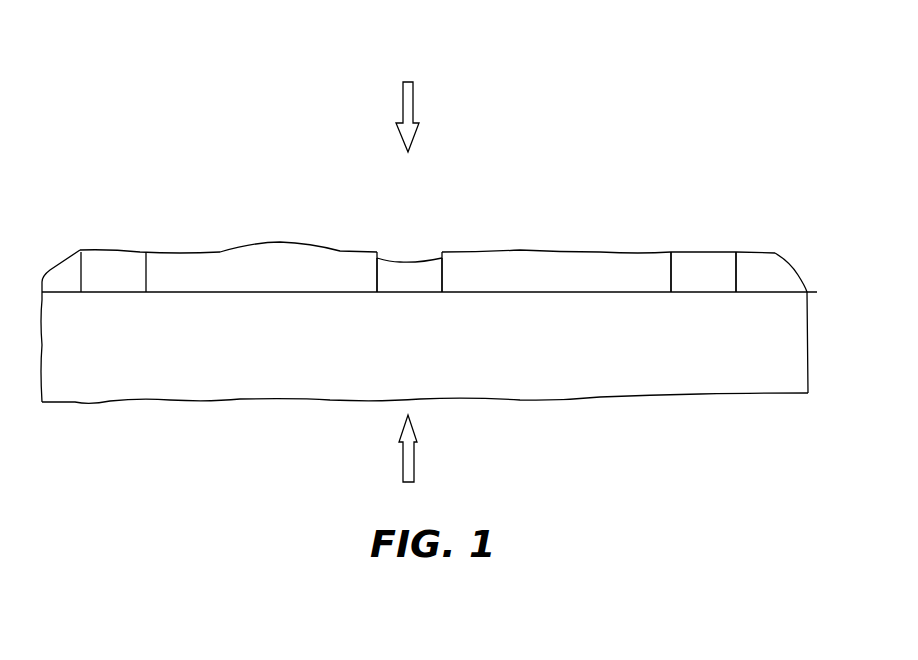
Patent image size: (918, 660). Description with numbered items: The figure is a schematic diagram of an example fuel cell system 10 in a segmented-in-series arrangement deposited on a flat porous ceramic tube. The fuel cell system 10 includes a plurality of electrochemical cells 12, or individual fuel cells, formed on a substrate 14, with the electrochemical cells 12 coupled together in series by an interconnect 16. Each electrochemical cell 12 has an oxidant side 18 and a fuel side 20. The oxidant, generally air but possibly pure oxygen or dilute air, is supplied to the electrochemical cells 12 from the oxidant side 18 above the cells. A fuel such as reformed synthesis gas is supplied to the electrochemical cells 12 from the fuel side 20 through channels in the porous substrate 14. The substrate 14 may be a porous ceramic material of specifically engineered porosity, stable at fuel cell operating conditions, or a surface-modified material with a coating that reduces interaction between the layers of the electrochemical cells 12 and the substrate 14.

The fuel cell system 10 is at (636, 86).
The electrochemical cells 12 is at (220, 252).
The substrate 14 is at (687, 395).
The interconnect 16 is at (408, 262).
The oxidant side 18 is at (400, 97).
The fuel side 20 is at (414, 462).